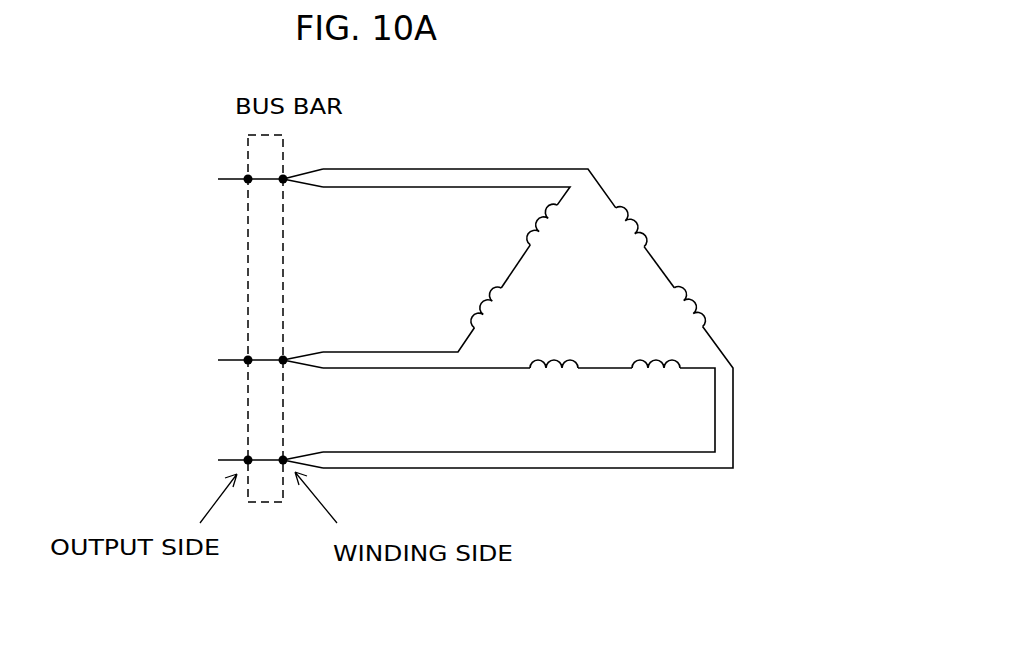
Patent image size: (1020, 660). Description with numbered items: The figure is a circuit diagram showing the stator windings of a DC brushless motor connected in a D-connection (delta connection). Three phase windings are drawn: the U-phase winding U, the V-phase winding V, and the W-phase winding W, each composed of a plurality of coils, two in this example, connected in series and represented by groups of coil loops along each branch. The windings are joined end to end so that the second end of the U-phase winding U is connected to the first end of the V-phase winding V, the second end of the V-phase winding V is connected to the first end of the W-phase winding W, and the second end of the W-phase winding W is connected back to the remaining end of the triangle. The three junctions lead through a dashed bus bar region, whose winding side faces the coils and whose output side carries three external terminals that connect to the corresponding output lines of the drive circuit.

The U-phase winding U is at (446, 269).
The V-phase winding V is at (519, 389).
The W-phase winding W is at (528, 318).